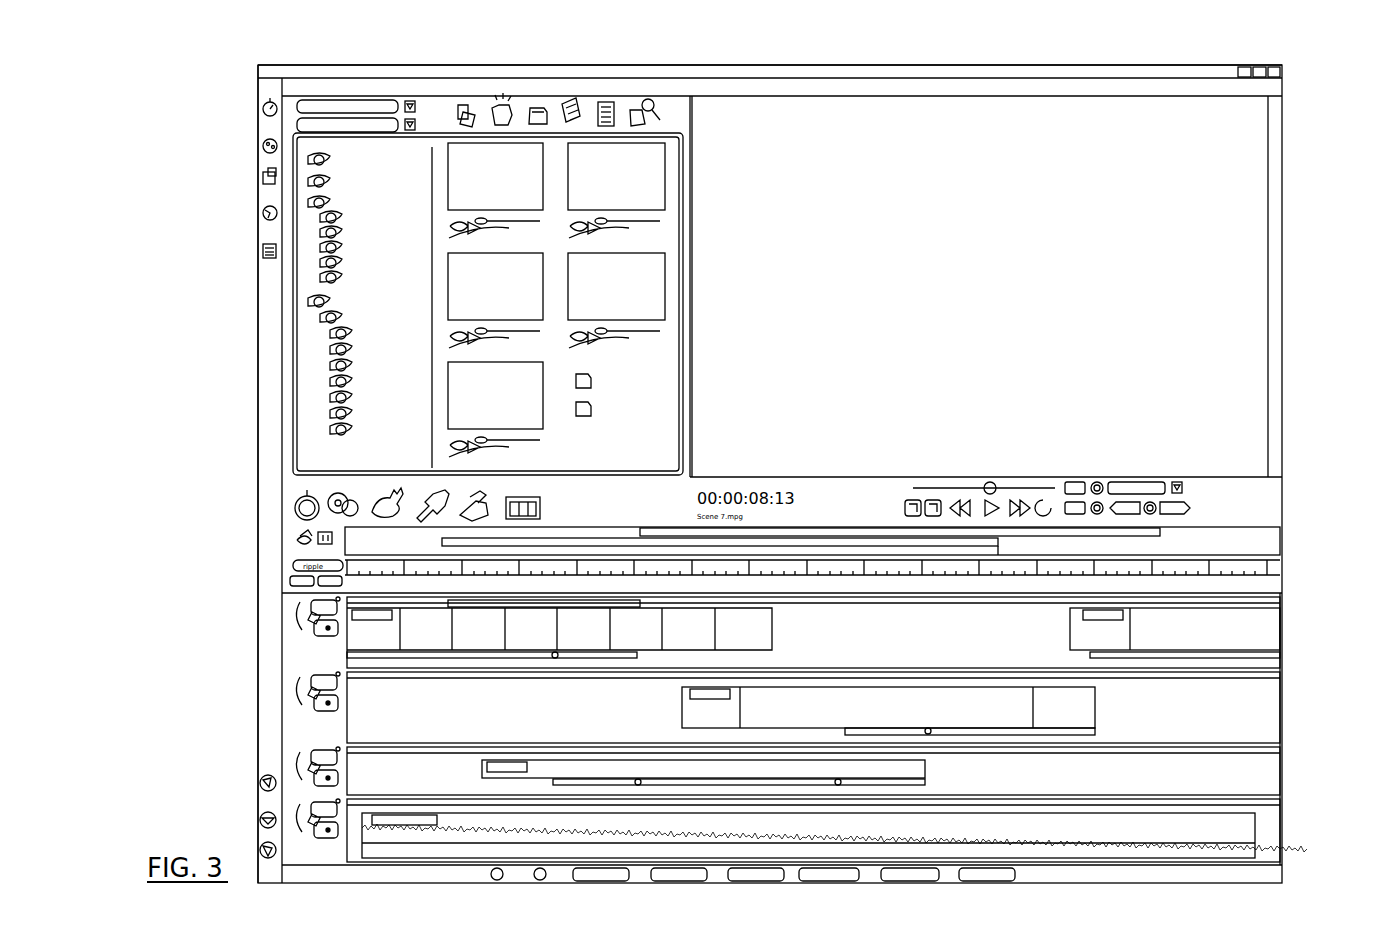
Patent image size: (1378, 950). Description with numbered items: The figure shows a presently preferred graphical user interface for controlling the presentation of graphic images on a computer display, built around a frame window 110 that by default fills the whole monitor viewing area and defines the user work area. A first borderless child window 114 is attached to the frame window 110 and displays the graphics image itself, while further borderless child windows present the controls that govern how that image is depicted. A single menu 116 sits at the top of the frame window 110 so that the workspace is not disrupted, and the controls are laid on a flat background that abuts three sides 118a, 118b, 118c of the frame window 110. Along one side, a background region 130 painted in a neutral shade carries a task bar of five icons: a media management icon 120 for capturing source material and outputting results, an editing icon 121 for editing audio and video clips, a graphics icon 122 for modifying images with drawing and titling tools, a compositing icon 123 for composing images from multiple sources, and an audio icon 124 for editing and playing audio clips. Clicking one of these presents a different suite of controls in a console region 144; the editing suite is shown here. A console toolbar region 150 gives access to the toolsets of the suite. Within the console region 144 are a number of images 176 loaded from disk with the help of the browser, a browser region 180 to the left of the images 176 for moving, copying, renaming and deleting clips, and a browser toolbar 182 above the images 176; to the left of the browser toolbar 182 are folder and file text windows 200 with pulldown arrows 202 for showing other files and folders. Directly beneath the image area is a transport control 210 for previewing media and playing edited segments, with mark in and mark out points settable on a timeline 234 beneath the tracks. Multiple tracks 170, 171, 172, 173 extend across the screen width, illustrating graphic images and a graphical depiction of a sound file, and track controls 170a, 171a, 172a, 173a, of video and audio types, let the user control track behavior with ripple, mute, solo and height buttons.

The folder and file text windows 200 is at (358, 72).
The first side of frame window 118a is at (650, 76).
The second side of frame window 118b is at (270, 512).
The third side of frame window 118c is at (1038, 876).
The background region 130 is at (232, 474).
The editing icon 121 is at (263, 108).
The graphics icon 122 is at (263, 144).
The compositing icon 123 is at (263, 174).
The audio icon 124 is at (264, 210).
The media management icon 120 is at (263, 252).
The console region 144 is at (483, 280).
The pulldown arrows 202 is at (427, 115).
The browser toolbar 182 is at (660, 110).
The browser region 180 is at (320, 382).
The images 176 is at (601, 274).
The menu 116 is at (474, 85).
The frame window 110 is at (1012, 286).
The first borderless child window 114 is at (1086, 245).
The console toolbar region 150 is at (553, 505).
The transport control 210 is at (1188, 503).
The timeline 234 is at (1208, 558).
The track control 170a is at (295, 618).
The track control 171a is at (295, 690).
The track control 172a is at (295, 770).
The track control 173a is at (295, 810).
The track 170 is at (910, 650).
The track 171 is at (575, 722).
The track 172 is at (1040, 784).
The track 173 is at (1165, 840).